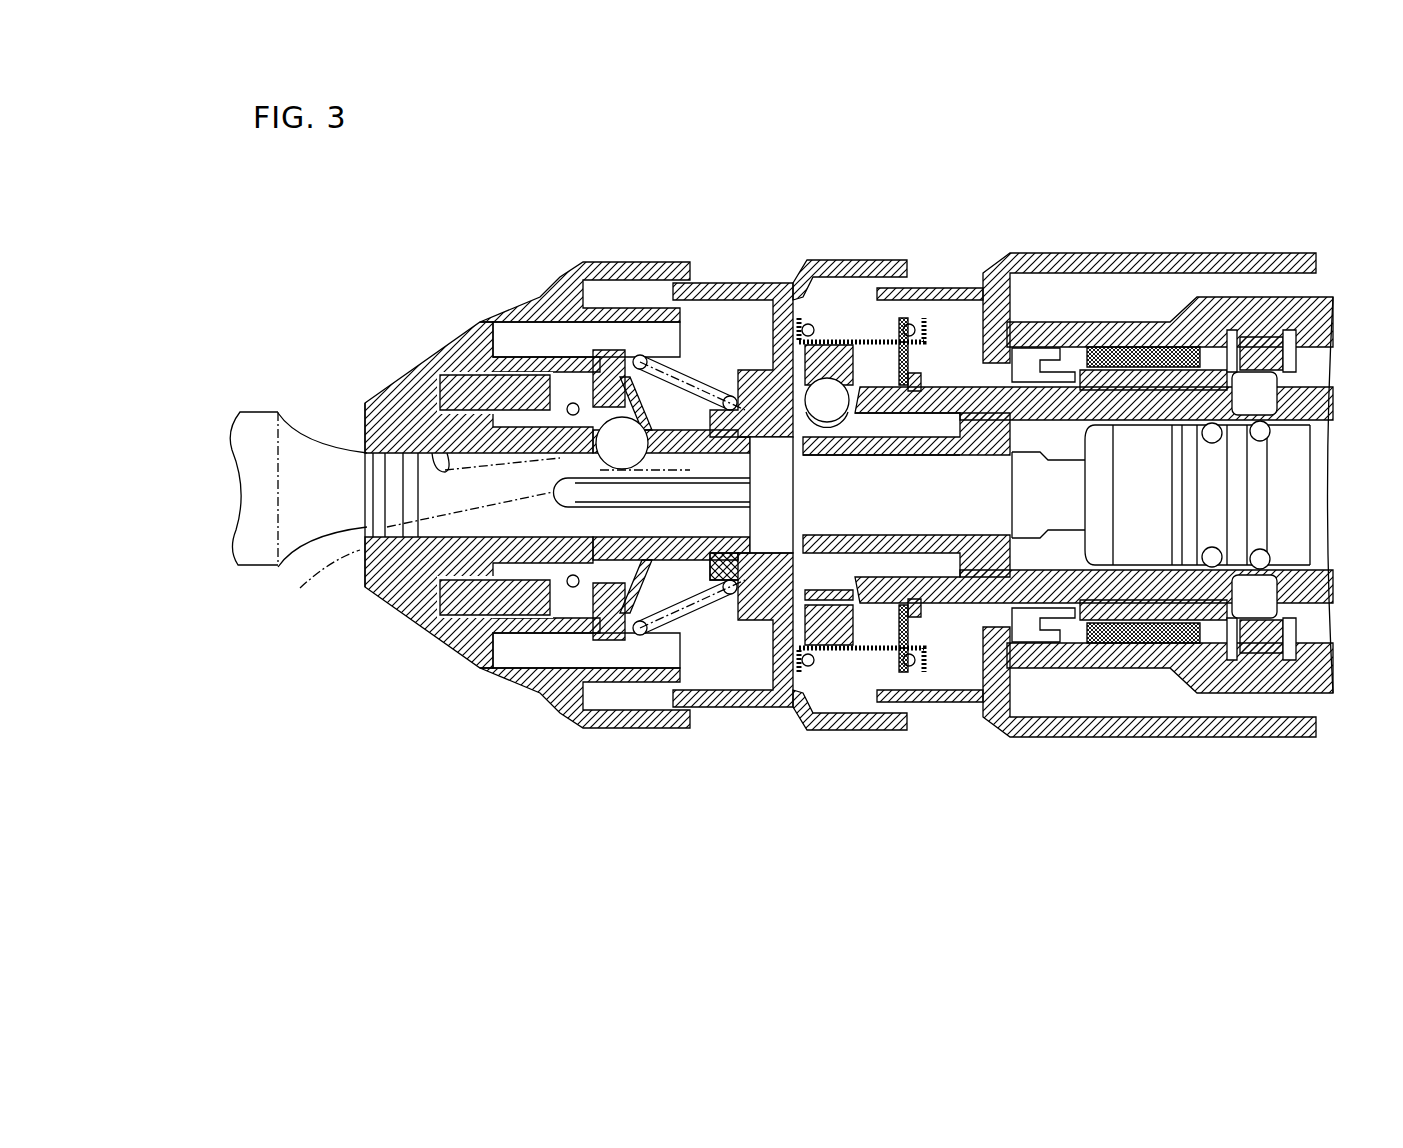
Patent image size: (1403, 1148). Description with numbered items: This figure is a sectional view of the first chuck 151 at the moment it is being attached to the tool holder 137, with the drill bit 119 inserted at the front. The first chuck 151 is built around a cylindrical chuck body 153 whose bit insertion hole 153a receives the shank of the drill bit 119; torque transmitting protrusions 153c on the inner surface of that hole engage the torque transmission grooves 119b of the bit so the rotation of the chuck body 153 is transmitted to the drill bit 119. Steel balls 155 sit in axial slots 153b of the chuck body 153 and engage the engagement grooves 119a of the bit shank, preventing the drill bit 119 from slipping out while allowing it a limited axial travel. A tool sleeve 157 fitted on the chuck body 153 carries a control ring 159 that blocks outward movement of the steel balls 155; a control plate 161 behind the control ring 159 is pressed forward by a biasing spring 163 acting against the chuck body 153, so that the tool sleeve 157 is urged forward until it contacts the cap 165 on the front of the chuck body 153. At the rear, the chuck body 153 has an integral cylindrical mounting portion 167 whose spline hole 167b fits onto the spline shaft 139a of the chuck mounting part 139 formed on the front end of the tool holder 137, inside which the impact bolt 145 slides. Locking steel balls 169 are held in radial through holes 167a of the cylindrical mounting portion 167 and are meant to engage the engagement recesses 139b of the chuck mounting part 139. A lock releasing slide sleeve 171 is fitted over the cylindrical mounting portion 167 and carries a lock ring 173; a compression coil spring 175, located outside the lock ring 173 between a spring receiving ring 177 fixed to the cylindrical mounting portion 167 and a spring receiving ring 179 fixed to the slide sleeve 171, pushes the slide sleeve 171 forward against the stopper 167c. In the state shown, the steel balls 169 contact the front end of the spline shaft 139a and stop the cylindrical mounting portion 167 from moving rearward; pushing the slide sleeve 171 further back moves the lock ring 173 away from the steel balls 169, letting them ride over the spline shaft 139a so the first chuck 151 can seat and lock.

The drill bit 119 is at (243, 408).
The engagement grooves 119a is at (460, 393).
The torque transmission grooves 119b is at (396, 616).
The tool holder 137 is at (1168, 365).
The chuck mounting part 139 is at (943, 412).
The spline shaft 139a is at (878, 535).
The engagement recesses 139b is at (878, 430).
The impact bolt 145 is at (1130, 548).
The first chuck 151 is at (633, 261).
The chuck body 153 is at (687, 431).
The bit insertion hole 153a is at (460, 453).
The slots 153b is at (583, 365).
The torque transmitting protrusions 153c is at (556, 493).
The steel balls 155 is at (617, 430).
The tool sleeve 157 is at (512, 680).
The control ring 159 is at (540, 680).
The control plate 161 is at (637, 628).
The biasing spring 163 is at (630, 630).
The cap 165 is at (430, 632).
The cylindrical mounting portion 167 is at (769, 368).
The through holes 167a is at (826, 377).
The spline hole 167b is at (824, 602).
The stopper 167c is at (725, 617).
The locking steel balls 169 is at (852, 260).
The lock releasing slide sleeve 171 is at (872, 705).
The lock ring 173 is at (866, 680).
The compression coil spring 175 is at (866, 290).
The spring receiving ring 177 is at (962, 690).
The spring receiving ring 179 is at (748, 708).